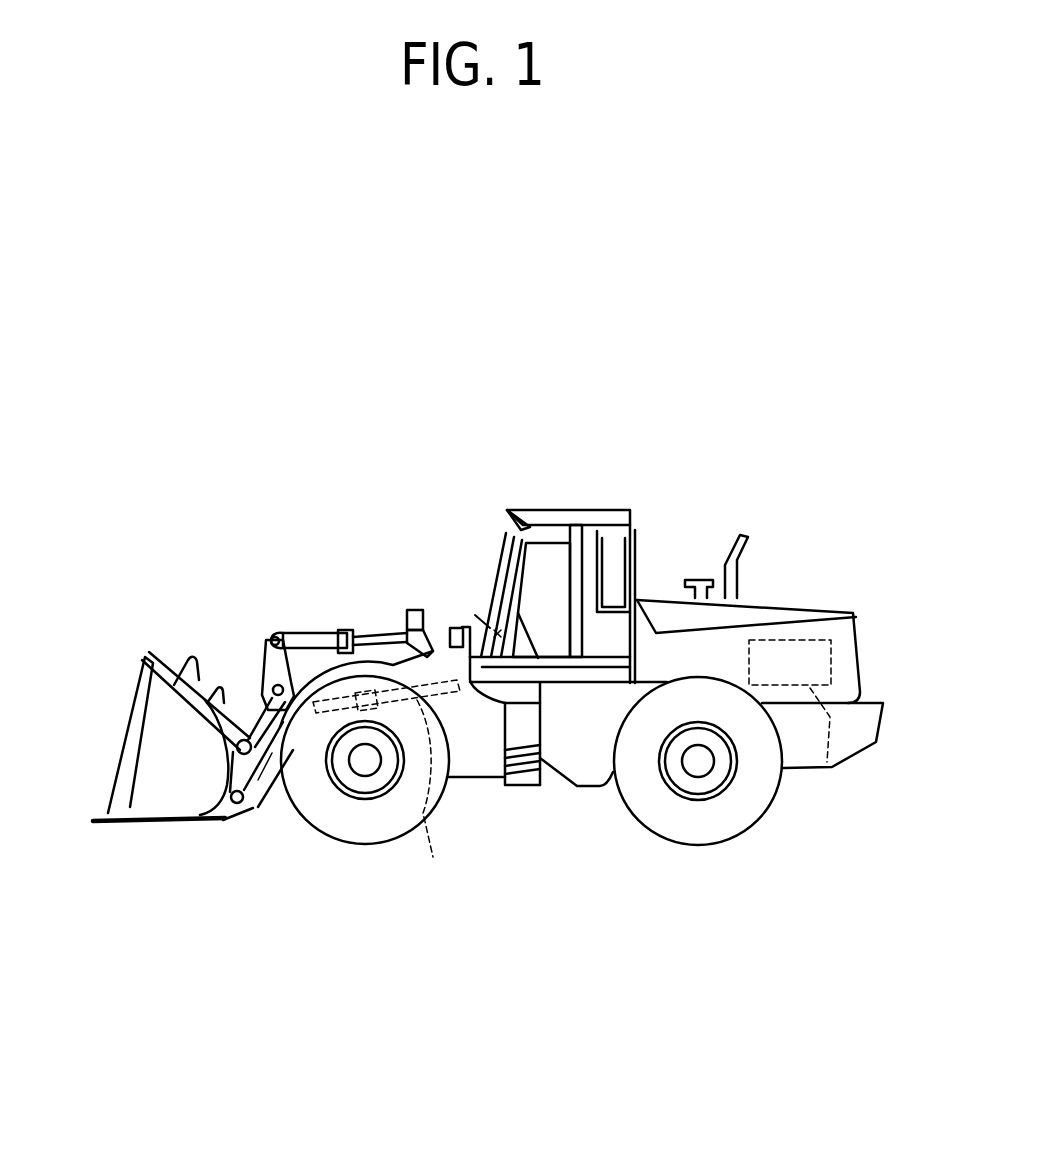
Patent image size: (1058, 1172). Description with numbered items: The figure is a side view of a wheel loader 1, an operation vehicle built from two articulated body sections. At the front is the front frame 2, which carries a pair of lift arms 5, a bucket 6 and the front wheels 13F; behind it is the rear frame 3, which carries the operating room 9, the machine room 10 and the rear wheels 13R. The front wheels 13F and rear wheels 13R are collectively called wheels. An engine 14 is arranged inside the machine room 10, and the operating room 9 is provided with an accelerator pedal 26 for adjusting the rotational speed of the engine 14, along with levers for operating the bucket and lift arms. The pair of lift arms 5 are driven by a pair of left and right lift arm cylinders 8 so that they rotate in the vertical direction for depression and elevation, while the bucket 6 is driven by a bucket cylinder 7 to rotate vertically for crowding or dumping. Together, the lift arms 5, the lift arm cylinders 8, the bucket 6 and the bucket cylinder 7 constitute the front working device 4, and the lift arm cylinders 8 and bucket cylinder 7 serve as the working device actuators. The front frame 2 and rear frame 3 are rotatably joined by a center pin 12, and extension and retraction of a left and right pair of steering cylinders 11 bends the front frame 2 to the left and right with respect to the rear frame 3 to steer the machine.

The wheel loader 1 is at (106, 378).
The front frame 2 is at (111, 548).
The rear frame 3 is at (873, 543).
The front working device 4 is at (264, 615).
The lift arms 5 is at (230, 820).
The bucket 6 is at (143, 793).
The bucket cylinder 7 is at (332, 640).
The lift arm cylinders 8 is at (433, 857).
The operating room 9 is at (573, 510).
The machine room 10 is at (862, 658).
The steering cylinders 11 is at (580, 790).
The center pin 12 is at (533, 788).
The front wheels 13F is at (356, 815).
The rear wheels 13R is at (740, 800).
The engine 14 is at (832, 775).
The accelerator pedal 26 is at (472, 624).